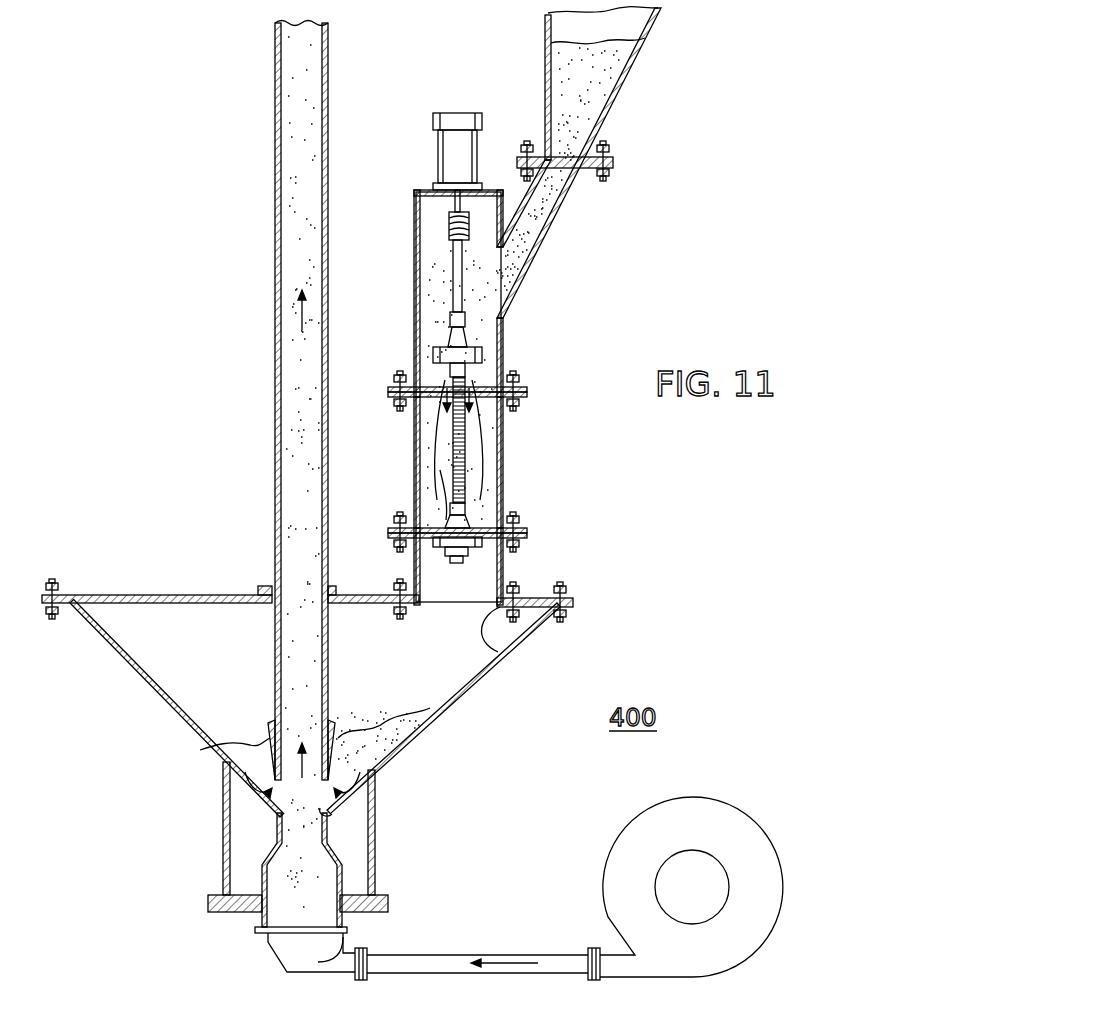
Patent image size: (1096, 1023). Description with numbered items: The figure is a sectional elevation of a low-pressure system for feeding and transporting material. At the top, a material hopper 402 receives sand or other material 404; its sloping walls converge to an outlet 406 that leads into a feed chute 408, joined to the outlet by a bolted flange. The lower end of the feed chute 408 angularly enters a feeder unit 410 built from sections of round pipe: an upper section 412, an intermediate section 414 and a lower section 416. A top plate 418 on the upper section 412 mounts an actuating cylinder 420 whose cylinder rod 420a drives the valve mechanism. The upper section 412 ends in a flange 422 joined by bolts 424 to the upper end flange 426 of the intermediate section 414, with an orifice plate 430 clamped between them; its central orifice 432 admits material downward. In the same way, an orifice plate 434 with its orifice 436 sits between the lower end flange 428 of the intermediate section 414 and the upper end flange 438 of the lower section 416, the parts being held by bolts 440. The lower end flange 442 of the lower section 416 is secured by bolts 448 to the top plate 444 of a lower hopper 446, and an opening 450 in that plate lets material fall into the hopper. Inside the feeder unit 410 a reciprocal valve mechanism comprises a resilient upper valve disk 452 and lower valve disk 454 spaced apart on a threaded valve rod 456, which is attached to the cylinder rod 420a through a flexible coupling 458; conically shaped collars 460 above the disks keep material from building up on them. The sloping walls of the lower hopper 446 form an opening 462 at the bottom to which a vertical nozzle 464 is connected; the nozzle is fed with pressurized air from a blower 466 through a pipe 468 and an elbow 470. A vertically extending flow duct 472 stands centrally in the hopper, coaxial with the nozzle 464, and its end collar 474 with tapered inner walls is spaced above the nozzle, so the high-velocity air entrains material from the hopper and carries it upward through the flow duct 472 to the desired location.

The material hopper 402 is at (619, 130).
The material 404 is at (598, 106).
The outlet 406 is at (599, 171).
The feed chute 408 is at (553, 242).
The feeder unit 410 is at (517, 359).
The upper section 412 is at (504, 338).
The intermediate section 414 is at (504, 486).
The lower section 416 is at (503, 582).
The top plate 418 is at (418, 192).
The actuating cylinder 420 is at (462, 147).
The cylinder rod 420a is at (455, 202).
The flange 422 is at (522, 393).
The bolts 424 is at (520, 380).
The upper end flange 426 is at (525, 410).
The lower end flange 428 is at (522, 526).
The orifice plate 430 is at (522, 400).
The orifice 432 is at (470, 430).
The orifice plate 434 is at (526, 532).
The orifice 436 is at (472, 522).
The lower flange lower plate 438 is at (522, 538).
The bolts 440 is at (440, 510).
The lower end flange 442 is at (516, 598).
The top plate 444 is at (572, 600).
The lower hopper 446 is at (437, 734).
The bolts 448 is at (520, 615).
The opening 450 is at (500, 652).
The upper valve disk 452 is at (434, 355).
The lower valve disk 454 is at (434, 545).
The threaded valve rod 456 is at (456, 286).
The flexible coupling 458 is at (449, 228).
The conically shaped collars 460 is at (446, 338).
The opening 462 is at (337, 812).
The nozzle 464 is at (345, 878).
The blower 466 is at (679, 797).
The pipe 468 is at (500, 955).
The elbow 470 is at (345, 950).
The flow duct 472 is at (276, 552).
The end collar 474 is at (258, 743).